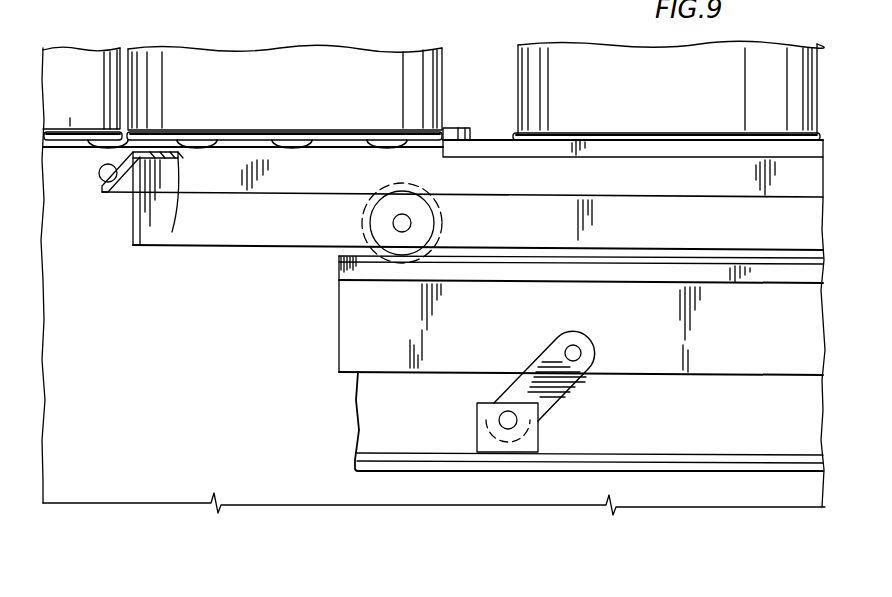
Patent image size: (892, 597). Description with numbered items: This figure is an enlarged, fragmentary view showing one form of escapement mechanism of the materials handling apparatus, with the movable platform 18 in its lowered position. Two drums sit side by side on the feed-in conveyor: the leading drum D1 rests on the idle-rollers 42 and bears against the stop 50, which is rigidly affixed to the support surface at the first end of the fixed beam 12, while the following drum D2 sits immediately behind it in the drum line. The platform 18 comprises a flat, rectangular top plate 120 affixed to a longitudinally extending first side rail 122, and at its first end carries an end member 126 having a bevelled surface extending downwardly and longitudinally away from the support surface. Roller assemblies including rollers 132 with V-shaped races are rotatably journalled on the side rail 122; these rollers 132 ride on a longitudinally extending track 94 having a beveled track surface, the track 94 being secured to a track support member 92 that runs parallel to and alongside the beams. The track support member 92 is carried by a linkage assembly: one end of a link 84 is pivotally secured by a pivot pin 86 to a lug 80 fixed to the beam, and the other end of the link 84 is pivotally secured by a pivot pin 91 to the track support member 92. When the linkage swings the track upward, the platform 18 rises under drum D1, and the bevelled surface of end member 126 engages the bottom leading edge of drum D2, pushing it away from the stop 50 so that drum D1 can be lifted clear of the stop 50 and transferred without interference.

The drum D1 is at (284, 92).
The drum D2 is at (82, 93).
The beam 12 is at (378, 423).
The platform 18 is at (658, 160).
The idle-rollers 42 is at (197, 135).
The stop 50 is at (455, 127).
The lug 80 is at (481, 443).
The link 84 is at (553, 390).
The pivot pin 86 is at (507, 426).
The pivot pin 91 is at (580, 351).
The track support member 92 is at (352, 346).
The track 94 is at (766, 275).
The top plate 120 is at (553, 152).
The first side rail 122 is at (200, 230).
The end member 126 is at (118, 160).
The rollers 132 is at (380, 250).